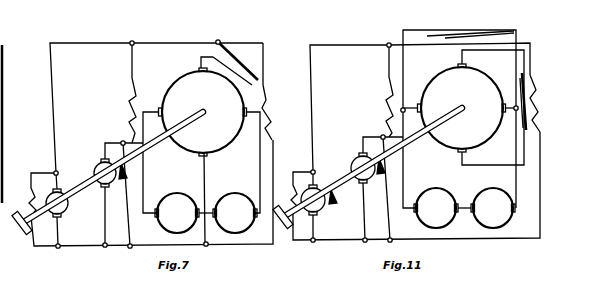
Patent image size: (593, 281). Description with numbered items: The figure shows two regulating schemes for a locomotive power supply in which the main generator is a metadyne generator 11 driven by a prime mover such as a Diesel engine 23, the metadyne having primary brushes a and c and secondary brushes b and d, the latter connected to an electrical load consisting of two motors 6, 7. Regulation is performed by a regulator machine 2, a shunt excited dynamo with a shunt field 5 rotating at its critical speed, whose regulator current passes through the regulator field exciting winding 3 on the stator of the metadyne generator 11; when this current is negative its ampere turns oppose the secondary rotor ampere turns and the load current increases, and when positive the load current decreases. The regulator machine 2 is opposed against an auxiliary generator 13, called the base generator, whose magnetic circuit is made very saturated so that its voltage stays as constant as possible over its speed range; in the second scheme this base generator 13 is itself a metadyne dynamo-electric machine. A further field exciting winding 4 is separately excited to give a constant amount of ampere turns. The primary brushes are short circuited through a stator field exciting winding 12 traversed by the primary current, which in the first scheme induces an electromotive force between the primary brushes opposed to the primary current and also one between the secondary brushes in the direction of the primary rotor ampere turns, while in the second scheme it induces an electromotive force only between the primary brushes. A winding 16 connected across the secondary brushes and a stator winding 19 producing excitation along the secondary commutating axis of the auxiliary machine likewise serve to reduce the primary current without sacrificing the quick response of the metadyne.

In FIG. 7, the regulator machine 2 is at (115, 194).
In FIG. 11, the regulator machine 2 is at (376, 188).
In FIG. 7, the regulator field exciting winding 3 is at (126, 93).
In FIG. 11, the regulator field exciting winding 3 is at (384, 91).
In FIG. 7, the field exciting winding 4 is at (274, 112).
In FIG. 11, the field exciting winding 4 is at (541, 103).
In FIG. 7, the shunt field 5 is at (128, 171).
In FIG. 11, the shunt field 5 is at (388, 166).
In FIG. 7, the motor 6 is at (176, 208).
In FIG. 11, the motor 6 is at (435, 204).
In FIG. 7, the motor 7 is at (235, 208).
In FIG. 11, the motor 7 is at (493, 204).
In FIG. 7, the metadyne generator 11 is at (203, 112).
In FIG. 11, the metadyne generator 11 is at (462, 108).
In FIG. 7, the field exciting winding 12 is at (235, 62).
In FIG. 11, the field exciting winding 12 is at (529, 72).
In FIG. 7, the auxiliary generator 13 is at (64, 209).
In FIG. 11, the auxiliary generator 13 is at (318, 206).
In FIG. 11, the winding 16 is at (490, 19).
In FIG. 11, the stator winding 19 is at (343, 193).
In FIG. 7, the Diesel engine 23 is at (17, 235).
In FIG. 11, the Diesel engine 23 is at (281, 232).